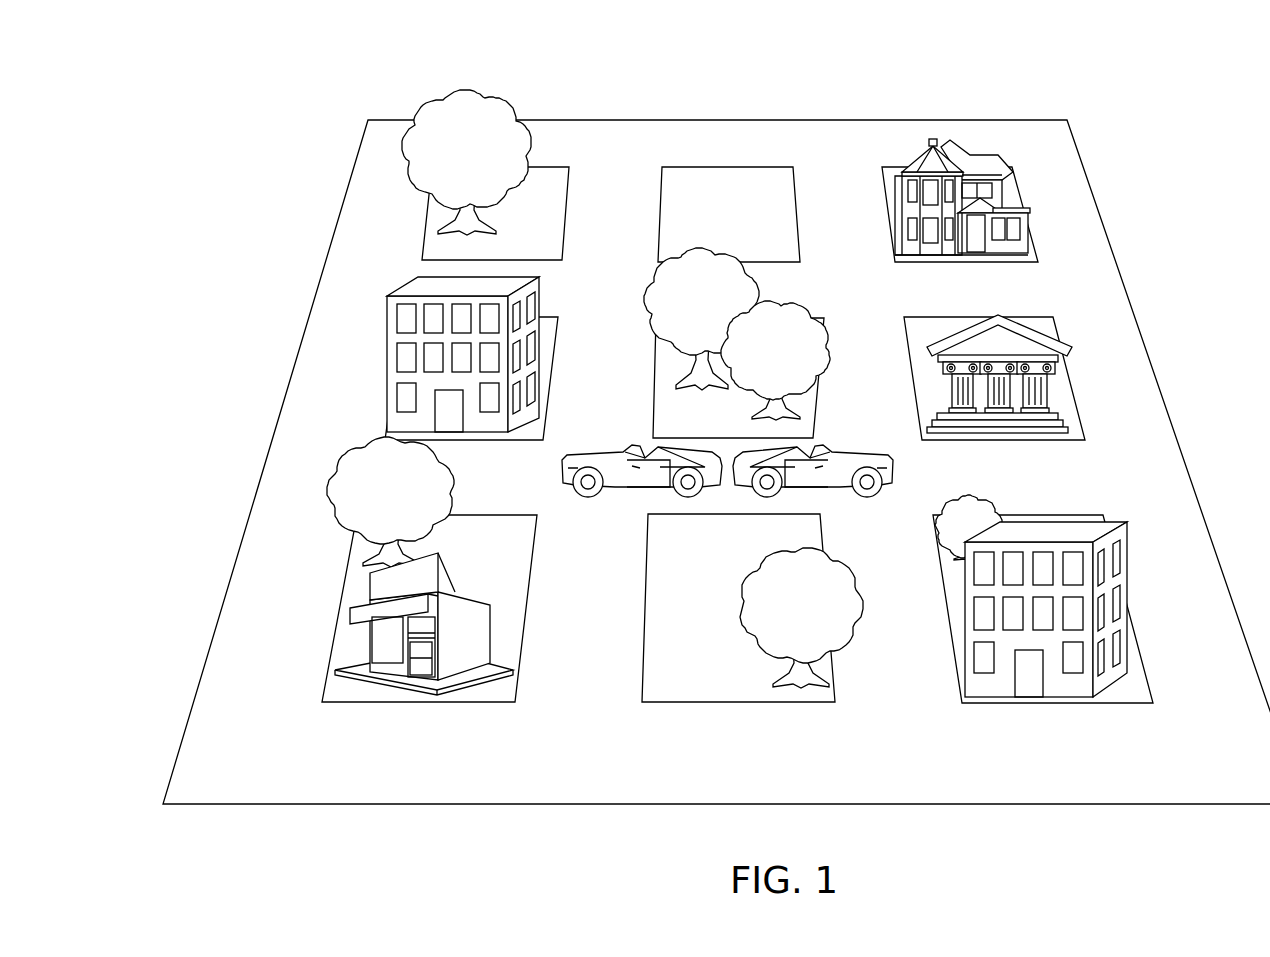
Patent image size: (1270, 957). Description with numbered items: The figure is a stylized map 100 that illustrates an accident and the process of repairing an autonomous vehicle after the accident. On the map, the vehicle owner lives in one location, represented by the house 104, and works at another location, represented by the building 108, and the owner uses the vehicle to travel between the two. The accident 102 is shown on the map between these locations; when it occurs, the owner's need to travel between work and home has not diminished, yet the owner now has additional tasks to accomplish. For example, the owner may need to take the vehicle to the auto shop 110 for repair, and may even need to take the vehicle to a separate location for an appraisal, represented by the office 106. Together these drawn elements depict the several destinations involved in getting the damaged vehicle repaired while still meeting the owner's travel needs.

The stylized map 100 is at (1188, 67).
The accident 102 is at (843, 420).
The house 104 is at (898, 158).
The office 106 is at (385, 365).
The building 108 is at (1050, 520).
The auto shop 110 is at (490, 638).